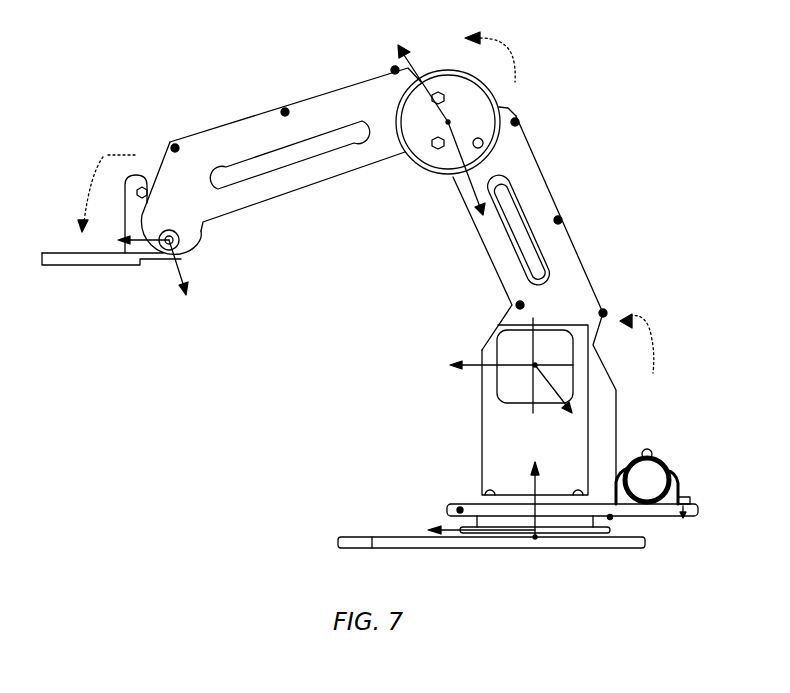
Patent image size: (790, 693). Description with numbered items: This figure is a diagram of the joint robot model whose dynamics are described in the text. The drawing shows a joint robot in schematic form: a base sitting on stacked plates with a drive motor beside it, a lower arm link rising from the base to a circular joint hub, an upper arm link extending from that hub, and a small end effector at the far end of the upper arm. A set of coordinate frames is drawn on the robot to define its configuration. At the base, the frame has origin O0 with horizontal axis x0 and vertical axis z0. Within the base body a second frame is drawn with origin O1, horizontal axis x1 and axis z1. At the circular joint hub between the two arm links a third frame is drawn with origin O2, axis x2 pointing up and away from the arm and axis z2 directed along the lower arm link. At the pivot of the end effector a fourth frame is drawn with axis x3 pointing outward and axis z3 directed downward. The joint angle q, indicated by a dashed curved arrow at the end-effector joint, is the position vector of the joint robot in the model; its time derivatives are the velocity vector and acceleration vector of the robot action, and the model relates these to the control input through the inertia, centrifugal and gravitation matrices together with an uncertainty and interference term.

The position vector of the joint robot q is at (107, 185).
The base frame x axis x0 is at (460, 526).
The base frame z axis z0 is at (530, 490).
The base frame origin O0 is at (534, 556).
The frame 1 x axis x1 is at (495, 370).
The frame 1 z axis z1 is at (554, 407).
The frame 1 origin O1 is at (548, 354).
The frame 2 x axis x2 is at (414, 77).
The frame 2 z axis z2 is at (470, 186).
The frame 2 origin O2 is at (465, 118).
The end effector frame x axis x3 is at (128, 242).
The end effector frame z axis z3 is at (180, 285).